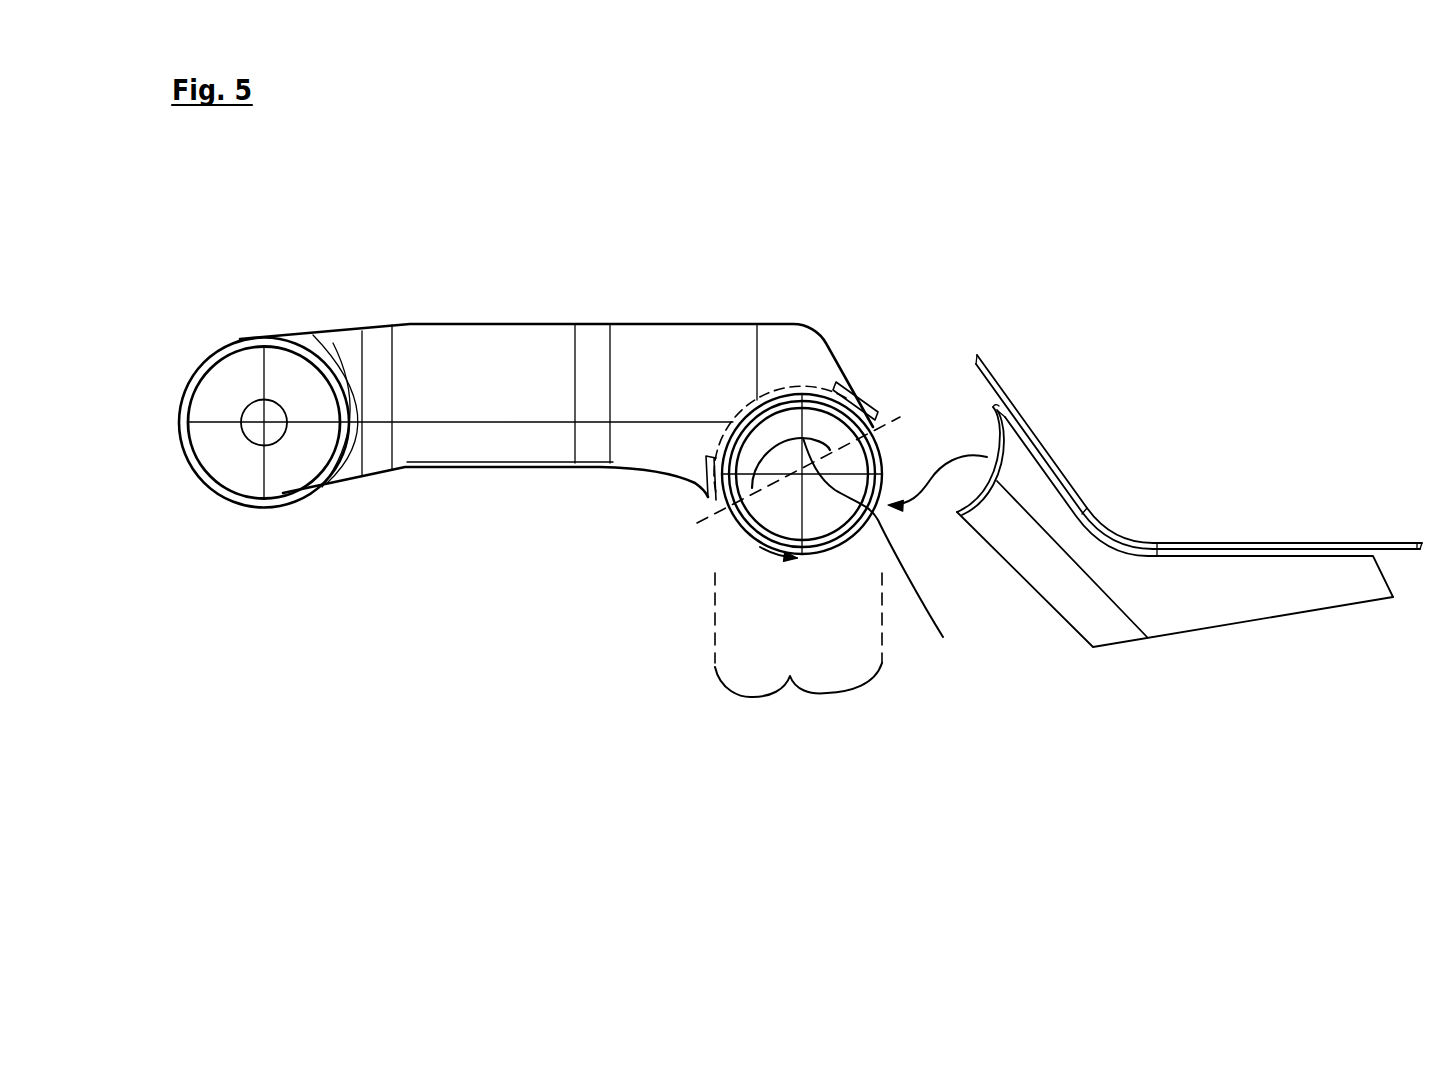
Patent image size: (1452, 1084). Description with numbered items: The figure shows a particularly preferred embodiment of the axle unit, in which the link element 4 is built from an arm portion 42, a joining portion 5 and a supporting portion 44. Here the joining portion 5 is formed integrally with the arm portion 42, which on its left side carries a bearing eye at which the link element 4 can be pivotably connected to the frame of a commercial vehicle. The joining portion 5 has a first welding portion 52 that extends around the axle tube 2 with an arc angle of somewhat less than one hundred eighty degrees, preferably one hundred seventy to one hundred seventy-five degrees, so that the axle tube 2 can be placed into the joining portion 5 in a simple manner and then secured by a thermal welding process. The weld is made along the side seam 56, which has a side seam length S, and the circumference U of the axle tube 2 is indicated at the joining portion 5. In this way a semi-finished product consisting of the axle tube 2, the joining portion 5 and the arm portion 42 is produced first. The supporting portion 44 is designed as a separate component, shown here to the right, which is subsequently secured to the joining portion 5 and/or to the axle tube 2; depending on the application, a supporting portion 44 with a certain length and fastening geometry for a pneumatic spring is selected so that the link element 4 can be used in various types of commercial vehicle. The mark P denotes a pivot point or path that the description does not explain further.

The axle tube 2 is at (785, 501).
The link element 4 is at (526, 320).
The joining portion 5 is at (790, 677).
The arm portion 42 is at (471, 144).
The supporting portion 44 is at (1180, 580).
The first welding portion 52 is at (944, 203).
The side seam 56 is at (631, 656).
The side seam length S is at (698, 478).
The pivot path P is at (953, 693).
The circumference U is at (760, 547).